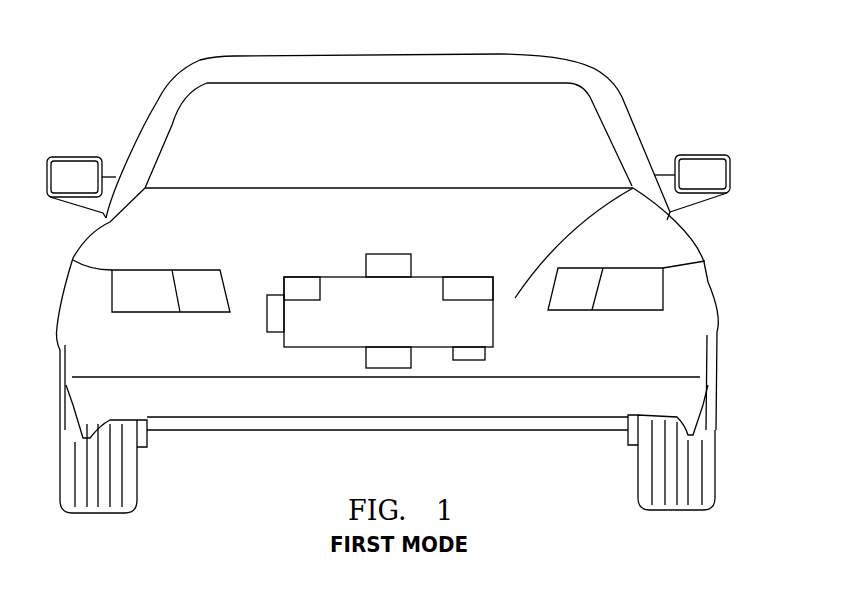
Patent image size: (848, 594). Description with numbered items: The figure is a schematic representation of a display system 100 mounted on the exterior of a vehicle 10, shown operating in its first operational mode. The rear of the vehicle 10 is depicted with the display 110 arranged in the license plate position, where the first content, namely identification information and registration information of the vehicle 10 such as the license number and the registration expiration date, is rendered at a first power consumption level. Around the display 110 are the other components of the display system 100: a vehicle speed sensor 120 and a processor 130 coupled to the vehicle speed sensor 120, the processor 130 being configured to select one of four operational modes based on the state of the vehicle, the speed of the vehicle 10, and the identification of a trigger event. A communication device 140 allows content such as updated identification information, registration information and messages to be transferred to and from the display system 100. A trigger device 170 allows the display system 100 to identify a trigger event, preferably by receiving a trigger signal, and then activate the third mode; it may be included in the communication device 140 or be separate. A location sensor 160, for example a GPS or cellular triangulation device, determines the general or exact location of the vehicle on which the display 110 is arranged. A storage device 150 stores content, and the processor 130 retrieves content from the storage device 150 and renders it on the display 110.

The vehicle 10 is at (654, 80).
The display system 100 is at (278, 272).
The display 110 is at (498, 297).
The vehicle speed sensor 120 is at (362, 352).
The processor 130 is at (270, 334).
The communication device 140 is at (488, 349).
The storage device 150 is at (400, 247).
The location sensor 160 is at (372, 250).
The trigger device 170 is at (362, 267).